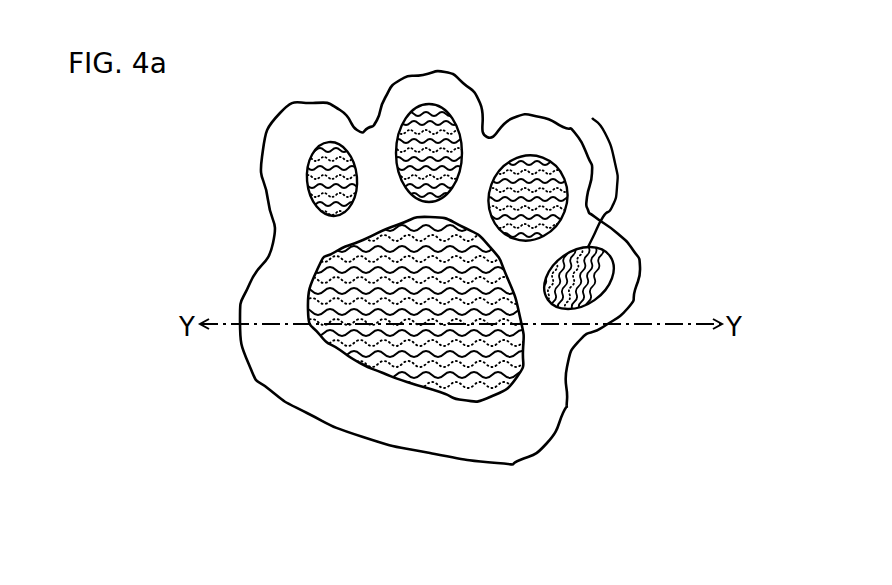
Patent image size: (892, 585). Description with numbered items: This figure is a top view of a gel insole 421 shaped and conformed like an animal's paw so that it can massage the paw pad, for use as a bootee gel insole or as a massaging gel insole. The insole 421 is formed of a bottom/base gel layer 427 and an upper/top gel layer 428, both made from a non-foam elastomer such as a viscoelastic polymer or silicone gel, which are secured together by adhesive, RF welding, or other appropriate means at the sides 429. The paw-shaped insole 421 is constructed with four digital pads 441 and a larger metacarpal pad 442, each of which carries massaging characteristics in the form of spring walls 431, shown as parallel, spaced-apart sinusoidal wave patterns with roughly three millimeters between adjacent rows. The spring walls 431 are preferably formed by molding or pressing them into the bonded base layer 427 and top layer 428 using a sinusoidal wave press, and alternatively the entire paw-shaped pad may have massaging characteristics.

The insole 421 is at (259, 273).
The bottom/base gel layer 427 is at (490, 433).
The upper/top gel layer 428 is at (640, 265).
The sides 429 is at (570, 417).
The spring walls 431 is at (310, 173).
The digital pads 441 is at (337, 157).
The metacarpal pad 442 is at (440, 392).